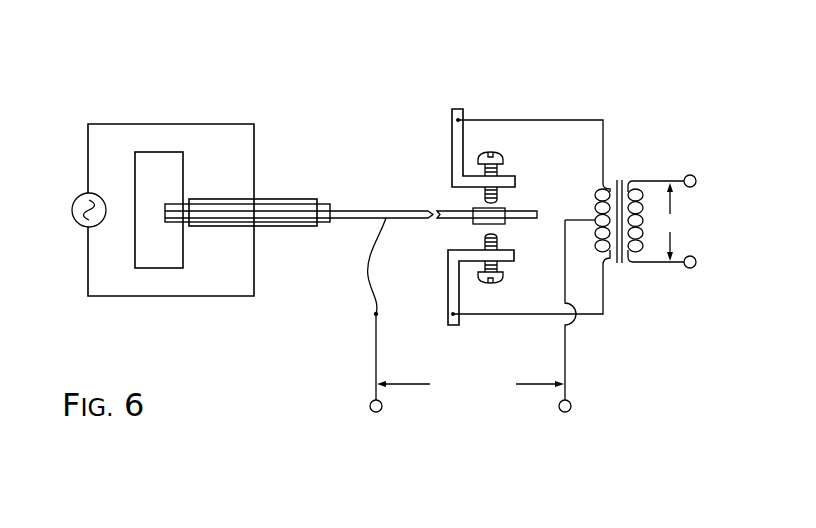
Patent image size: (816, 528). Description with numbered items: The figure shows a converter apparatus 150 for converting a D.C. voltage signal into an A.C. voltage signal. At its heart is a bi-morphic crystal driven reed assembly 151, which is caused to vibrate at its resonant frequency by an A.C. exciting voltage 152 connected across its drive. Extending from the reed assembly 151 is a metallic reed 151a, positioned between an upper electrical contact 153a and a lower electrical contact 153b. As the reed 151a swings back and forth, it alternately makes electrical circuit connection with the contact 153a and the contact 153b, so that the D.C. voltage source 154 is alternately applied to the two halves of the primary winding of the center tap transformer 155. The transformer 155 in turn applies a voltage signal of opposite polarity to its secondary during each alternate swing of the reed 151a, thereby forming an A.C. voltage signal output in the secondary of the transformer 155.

The converter apparatus 150 is at (270, 92).
The bi-morphic crystal driven reed assembly 151 is at (284, 190).
The metallic reed 151a is at (394, 210).
The A.C. exciting voltage 152 is at (72, 206).
The electrical contact 153a is at (452, 138).
The electrical contact 153b is at (448, 292).
The D.C. voltage source 154 is at (417, 432).
The center tap transformer 155 is at (620, 178).